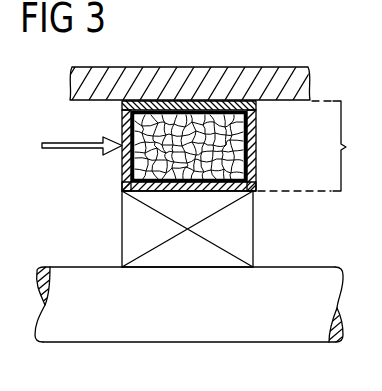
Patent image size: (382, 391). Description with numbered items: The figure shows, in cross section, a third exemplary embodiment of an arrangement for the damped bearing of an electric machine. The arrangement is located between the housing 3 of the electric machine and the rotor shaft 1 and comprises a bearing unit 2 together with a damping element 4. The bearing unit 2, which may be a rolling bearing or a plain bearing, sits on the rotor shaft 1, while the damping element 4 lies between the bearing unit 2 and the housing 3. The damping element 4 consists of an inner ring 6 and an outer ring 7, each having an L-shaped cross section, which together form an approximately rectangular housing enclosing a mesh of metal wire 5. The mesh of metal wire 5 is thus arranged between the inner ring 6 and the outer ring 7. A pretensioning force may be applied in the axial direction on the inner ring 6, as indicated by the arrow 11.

The rotor shaft 1 is at (253, 335).
The bearing unit 2 is at (248, 230).
The housing 3 is at (258, 75).
The damping element 4 is at (313, 146).
The mesh of metal wire 5 is at (234, 123).
The inner ring 6 is at (122, 163).
The outer ring 7 is at (254, 158).
The arrow 11 is at (68, 142).